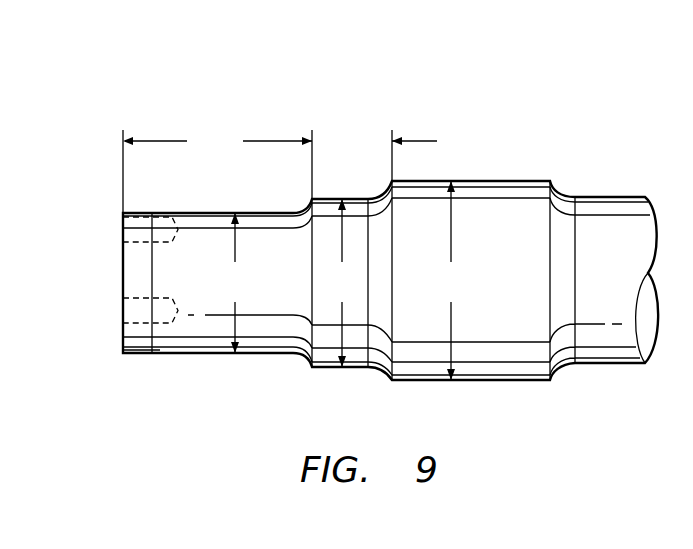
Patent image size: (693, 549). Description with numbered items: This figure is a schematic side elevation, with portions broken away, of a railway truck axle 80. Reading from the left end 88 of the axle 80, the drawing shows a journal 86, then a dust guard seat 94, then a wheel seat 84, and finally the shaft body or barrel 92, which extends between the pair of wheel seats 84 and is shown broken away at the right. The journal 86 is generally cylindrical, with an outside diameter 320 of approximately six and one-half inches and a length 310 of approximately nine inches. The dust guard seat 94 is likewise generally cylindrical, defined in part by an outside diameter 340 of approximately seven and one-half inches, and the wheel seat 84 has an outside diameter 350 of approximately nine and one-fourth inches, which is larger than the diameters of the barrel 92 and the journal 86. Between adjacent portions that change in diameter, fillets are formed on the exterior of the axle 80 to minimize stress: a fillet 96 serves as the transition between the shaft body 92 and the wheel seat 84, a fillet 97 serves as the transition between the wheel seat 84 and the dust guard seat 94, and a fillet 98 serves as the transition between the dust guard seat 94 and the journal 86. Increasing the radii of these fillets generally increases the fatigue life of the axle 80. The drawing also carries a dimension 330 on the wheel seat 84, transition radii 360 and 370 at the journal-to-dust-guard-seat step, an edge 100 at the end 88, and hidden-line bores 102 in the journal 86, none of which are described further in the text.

The axle 80 is at (378, 103).
The wheel seat 84 is at (510, 383).
The journal 86 is at (195, 357).
The end 88 is at (123, 330).
The shaft body or barrel 92 is at (608, 368).
The dust guard seat 94 is at (325, 368).
The fillet 96 is at (553, 187).
The fillet 97 is at (385, 188).
The fillet 98 is at (305, 360).
The end edge 100 is at (138, 355).
The bore 102 is at (125, 236).
The length 310 is at (217, 171).
The outside diameter 320 is at (235, 283).
The length of large portion 330 is at (436, 141).
The outside diameter 340 is at (342, 283).
The outside diameter 350 is at (451, 280).
The upper transition radius 360 is at (300, 201).
The lower transition radius 370 is at (383, 375).